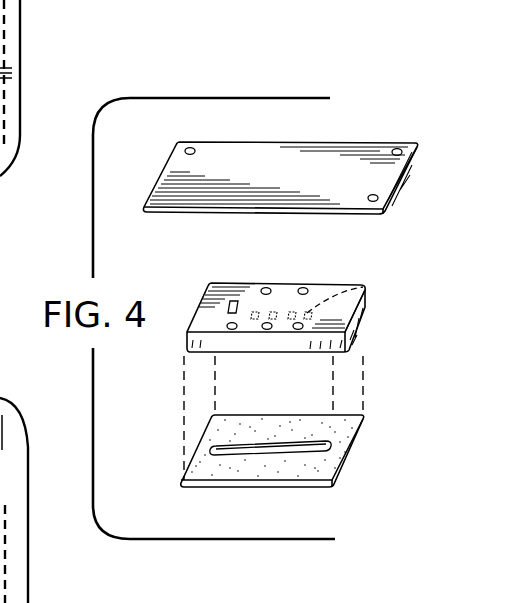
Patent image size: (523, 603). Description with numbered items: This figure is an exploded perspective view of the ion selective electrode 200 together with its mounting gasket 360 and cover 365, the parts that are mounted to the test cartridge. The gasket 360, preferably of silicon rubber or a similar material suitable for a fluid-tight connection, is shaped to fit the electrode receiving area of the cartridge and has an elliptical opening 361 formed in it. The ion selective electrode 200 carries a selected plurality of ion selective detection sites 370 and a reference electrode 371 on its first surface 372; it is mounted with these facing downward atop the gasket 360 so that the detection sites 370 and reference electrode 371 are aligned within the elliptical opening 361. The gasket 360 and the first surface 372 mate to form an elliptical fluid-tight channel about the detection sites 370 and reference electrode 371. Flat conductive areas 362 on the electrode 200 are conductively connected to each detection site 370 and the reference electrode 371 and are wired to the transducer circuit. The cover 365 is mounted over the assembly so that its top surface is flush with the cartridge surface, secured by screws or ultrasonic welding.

The ion selective electrode 200 is at (339, 279).
The gasket 360 is at (282, 470).
The elliptical opening 361 is at (260, 449).
The flat conductive areas 362 is at (233, 331).
The cover 365 is at (325, 142).
The ion selective detection sites 370 is at (366, 289).
The reference electrode 371 is at (230, 282).
The first surface 372 is at (348, 331).